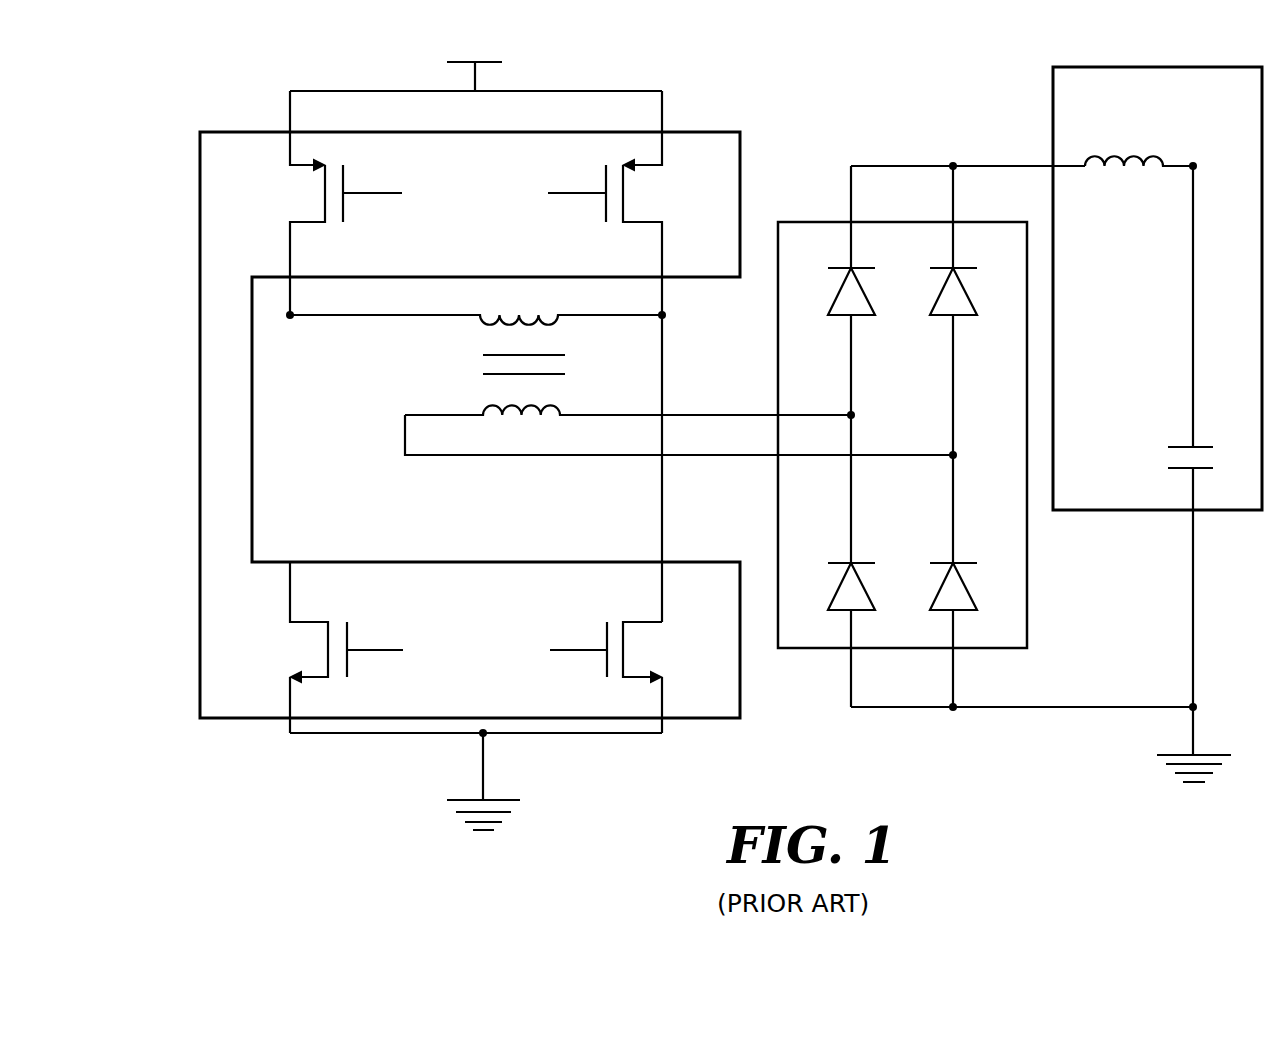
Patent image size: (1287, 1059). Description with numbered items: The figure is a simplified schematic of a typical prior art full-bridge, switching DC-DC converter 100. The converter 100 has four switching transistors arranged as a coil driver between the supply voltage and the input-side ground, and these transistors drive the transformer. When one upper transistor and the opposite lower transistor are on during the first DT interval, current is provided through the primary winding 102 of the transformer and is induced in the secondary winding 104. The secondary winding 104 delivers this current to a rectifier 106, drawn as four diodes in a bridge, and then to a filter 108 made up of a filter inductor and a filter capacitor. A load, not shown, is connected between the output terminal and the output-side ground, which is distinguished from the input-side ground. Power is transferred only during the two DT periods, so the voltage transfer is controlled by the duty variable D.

The converter 100 is at (874, 91).
The primary winding 102 is at (520, 315).
The secondary winding 104 is at (520, 415).
The rectifier 106 is at (792, 650).
The filter 108 is at (1233, 511).